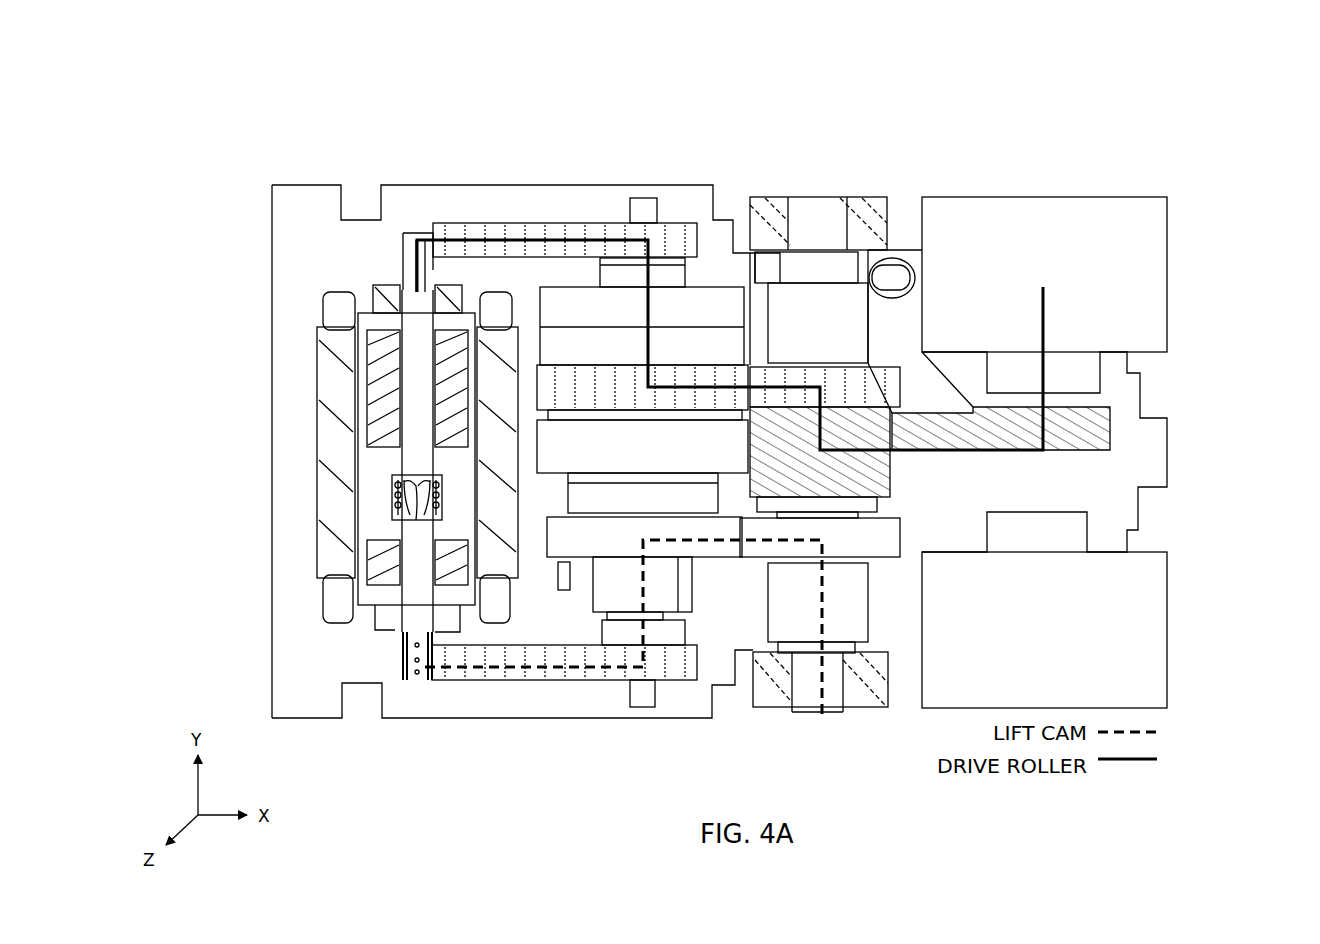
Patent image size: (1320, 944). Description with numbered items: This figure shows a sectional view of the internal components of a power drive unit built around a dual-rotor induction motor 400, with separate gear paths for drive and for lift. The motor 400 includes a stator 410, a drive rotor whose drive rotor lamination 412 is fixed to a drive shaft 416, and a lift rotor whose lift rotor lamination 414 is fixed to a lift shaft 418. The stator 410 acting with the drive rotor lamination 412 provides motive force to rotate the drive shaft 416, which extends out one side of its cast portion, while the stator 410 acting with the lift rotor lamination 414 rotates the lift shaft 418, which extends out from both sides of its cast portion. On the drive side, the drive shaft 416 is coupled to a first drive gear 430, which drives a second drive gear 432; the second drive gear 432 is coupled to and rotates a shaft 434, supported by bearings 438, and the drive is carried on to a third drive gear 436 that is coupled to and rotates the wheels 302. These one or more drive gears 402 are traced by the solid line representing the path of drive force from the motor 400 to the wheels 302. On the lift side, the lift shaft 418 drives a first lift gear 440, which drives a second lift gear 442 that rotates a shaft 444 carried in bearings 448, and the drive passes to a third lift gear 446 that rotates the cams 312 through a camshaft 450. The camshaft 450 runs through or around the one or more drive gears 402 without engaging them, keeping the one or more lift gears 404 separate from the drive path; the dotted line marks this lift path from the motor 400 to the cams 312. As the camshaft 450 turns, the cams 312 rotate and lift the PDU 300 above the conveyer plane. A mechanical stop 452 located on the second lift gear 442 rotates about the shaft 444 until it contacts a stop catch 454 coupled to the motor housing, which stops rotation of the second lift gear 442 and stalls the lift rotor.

The PDU 300 is at (203, 186).
The wheels 302 is at (1162, 228).
The cams 312 is at (868, 215).
The dual-rotor induction motor 400 is at (258, 405).
The drive gears 402 is at (592, 163).
The lift gears 404 is at (563, 724).
The stator 410 is at (338, 488).
The drive rotor lamination 412 is at (370, 352).
The lift rotor lamination 414 is at (368, 570).
The drive shaft 416 is at (416, 268).
The lift shaft 418 is at (412, 612).
The first drive gear 430 is at (512, 228).
The second drive gear 432 is at (686, 220).
The shaft 434 is at (645, 205).
The third drive gear 436 is at (1112, 458).
The bearings 438 is at (602, 432).
The first lift gear 440 is at (515, 682).
The second lift gear 442 is at (677, 558).
The shaft 444 is at (640, 700).
The third lift gear 446 is at (842, 552).
The bearings 448 is at (658, 506).
The camshaft 450 is at (813, 213).
The mechanical stop 452 is at (717, 560).
The stop catch 454 is at (562, 590).